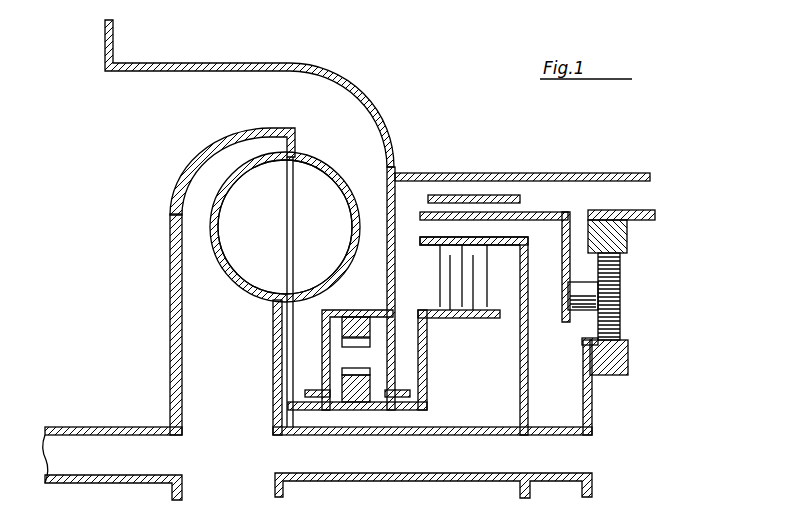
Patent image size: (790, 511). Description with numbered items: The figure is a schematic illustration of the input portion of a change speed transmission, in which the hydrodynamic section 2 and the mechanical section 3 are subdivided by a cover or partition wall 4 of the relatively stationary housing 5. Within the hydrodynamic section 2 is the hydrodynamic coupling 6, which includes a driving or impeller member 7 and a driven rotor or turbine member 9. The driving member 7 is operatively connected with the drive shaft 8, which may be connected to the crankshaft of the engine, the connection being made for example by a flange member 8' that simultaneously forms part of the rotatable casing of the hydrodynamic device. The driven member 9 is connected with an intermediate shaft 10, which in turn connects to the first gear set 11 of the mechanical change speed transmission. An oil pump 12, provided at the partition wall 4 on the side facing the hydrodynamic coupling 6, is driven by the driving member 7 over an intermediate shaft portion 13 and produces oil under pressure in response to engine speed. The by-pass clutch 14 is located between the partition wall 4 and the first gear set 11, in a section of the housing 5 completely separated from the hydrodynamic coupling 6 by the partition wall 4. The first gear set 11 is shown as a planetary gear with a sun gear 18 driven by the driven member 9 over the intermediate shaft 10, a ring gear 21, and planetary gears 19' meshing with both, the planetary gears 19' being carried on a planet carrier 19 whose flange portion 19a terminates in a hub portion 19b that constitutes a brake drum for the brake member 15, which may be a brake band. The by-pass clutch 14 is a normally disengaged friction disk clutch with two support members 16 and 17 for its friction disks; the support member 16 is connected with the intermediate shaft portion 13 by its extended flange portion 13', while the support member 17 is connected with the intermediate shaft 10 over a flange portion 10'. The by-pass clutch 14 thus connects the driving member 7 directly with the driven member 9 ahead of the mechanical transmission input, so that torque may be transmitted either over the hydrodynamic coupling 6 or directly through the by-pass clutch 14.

The hydrodynamic section 2 is at (84, 113).
The mechanical section 3 is at (655, 199).
The partition wall 4 is at (421, 294).
The housing 5 is at (221, 62).
The hydrodynamic coupling 6 is at (312, 128).
The driving member 7 is at (315, 178).
The drive shaft 8 is at (124, 463).
The flange member 8' is at (154, 324).
The driven member 9 is at (252, 272).
The intermediate shaft 10 is at (432, 399).
The flange portion 10' is at (495, 336).
The first gear set 11 is at (634, 333).
The oil pump 12 is at (340, 358).
The intermediate shaft portion 13 is at (357, 386).
The extended flange portion 13' is at (443, 360).
The by-pass clutch 14 is at (467, 320).
The brake member 15 is at (483, 195).
The friction disk support member 16 is at (488, 319).
The friction disk support member 17 is at (508, 238).
The sun gear 18 is at (617, 372).
The planet carrier 19 is at (583, 309).
The planetary gears 19' is at (634, 294).
The flange portion 19a is at (562, 276).
The hub portion 19b is at (419, 214).
The ring gear 21 is at (624, 236).